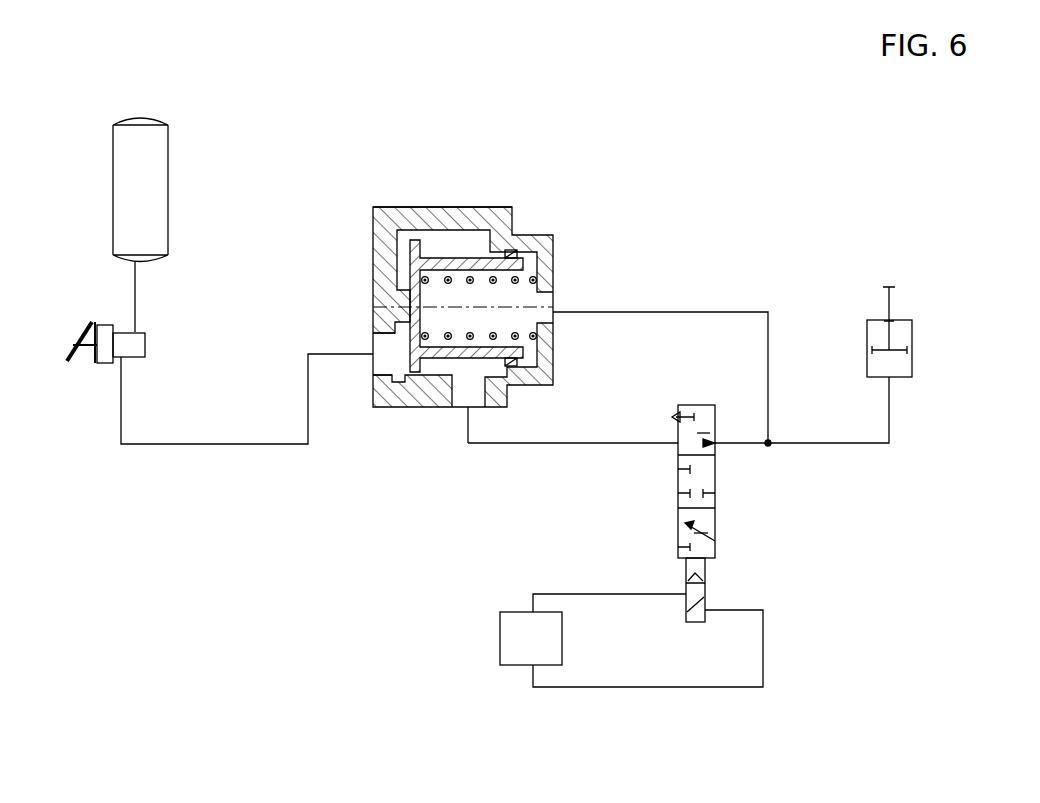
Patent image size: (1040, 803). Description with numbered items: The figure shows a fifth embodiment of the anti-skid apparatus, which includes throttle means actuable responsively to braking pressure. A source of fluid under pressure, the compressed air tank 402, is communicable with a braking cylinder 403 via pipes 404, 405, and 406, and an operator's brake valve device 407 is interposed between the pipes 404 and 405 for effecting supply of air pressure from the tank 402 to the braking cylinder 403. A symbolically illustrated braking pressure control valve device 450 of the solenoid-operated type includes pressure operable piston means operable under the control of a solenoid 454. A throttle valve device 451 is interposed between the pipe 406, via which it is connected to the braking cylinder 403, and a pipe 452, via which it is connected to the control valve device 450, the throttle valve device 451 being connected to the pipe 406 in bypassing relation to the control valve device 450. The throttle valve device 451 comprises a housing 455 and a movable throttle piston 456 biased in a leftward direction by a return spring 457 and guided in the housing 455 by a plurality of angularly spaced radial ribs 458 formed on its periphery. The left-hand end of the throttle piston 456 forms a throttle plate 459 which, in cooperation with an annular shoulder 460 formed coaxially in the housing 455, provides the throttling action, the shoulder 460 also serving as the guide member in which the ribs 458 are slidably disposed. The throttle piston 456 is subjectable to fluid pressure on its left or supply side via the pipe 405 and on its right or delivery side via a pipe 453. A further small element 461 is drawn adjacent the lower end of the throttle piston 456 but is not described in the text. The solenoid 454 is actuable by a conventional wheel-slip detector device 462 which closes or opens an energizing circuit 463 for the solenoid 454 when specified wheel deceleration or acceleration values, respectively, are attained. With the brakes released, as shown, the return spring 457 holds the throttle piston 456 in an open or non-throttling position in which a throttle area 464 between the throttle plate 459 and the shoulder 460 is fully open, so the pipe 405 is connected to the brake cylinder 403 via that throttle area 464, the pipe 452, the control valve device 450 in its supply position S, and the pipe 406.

The compressed air tank 402 is at (152, 189).
The braking cylinder 403 is at (910, 368).
The pipe 404 is at (138, 298).
The pipe 405 is at (233, 447).
The pipe 406 is at (840, 444).
The operator's brake valve device 407 is at (134, 357).
The braking pressure control valve device 450 is at (718, 514).
The throttle valve device 451 is at (490, 204).
The pipe 452 is at (627, 444).
The pipe 453 is at (718, 313).
The solenoid 454 is at (707, 595).
The housing 455 is at (452, 217).
The throttle piston 456 is at (511, 250).
The return spring 457 is at (496, 283).
The radial ribs 458 is at (438, 248).
The throttle plate 459 is at (404, 395).
The annular shoulder 460 is at (446, 380).
The lower seal 461 is at (505, 368).
The wheel-slip detector device 462 is at (515, 633).
The energizing circuit 463 is at (704, 689).
The throttle area 464 is at (400, 352).